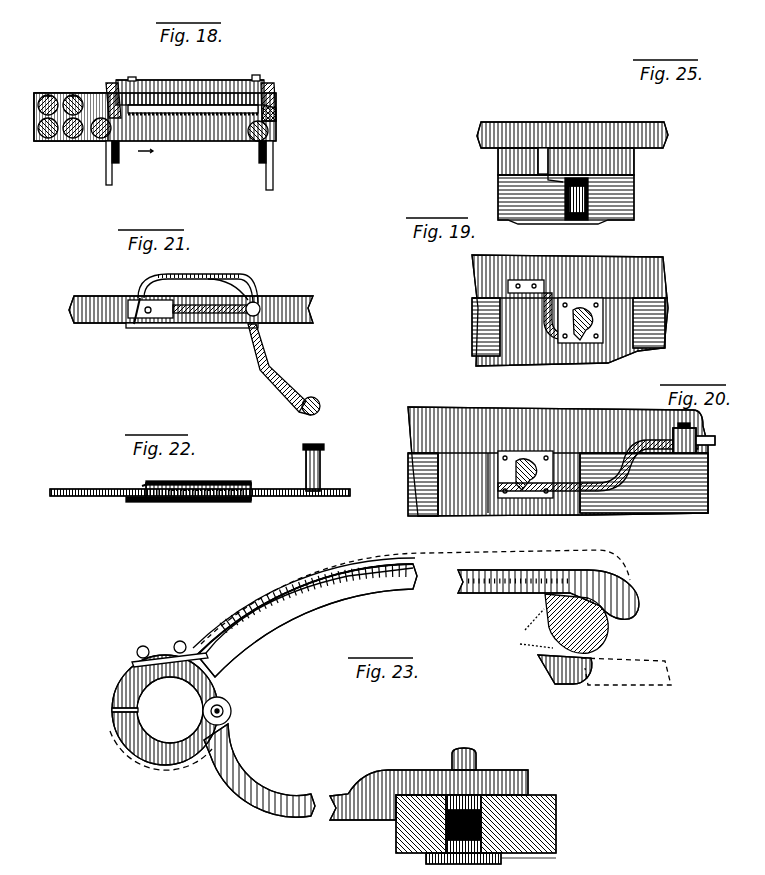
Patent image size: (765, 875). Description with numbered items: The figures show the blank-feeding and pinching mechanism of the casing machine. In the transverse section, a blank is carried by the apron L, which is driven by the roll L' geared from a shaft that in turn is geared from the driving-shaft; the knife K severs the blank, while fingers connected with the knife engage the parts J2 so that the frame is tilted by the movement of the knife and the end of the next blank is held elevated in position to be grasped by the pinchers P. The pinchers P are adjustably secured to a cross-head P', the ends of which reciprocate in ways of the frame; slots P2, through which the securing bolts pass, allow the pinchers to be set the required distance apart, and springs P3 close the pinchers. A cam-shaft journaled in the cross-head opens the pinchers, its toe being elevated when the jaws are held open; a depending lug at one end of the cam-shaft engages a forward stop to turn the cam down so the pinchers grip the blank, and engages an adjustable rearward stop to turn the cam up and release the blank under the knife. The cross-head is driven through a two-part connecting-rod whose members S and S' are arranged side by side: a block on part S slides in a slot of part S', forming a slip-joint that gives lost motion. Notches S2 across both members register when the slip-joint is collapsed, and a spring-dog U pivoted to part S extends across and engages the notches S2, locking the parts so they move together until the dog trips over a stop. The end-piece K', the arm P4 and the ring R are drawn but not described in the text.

In FIG. 18, the apron L is at (155, 112).
In FIG. 18, the roll L' is at (153, 113).
In FIG. 18, the knife K is at (190, 91).
In FIG. 18, the end block K' is at (200, 128).
In FIG. 18, the parts J2 is at (125, 72).
In FIG. 25, the pinchers P is at (566, 205).
In FIG. 19, the pinchers P is at (589, 323).
In FIG. 20, the pinchers P is at (526, 461).
In FIG. 23, the pinchers P is at (366, 772).
In FIG. 18, the cross-head P' is at (281, 111).
In FIG. 25, the cross-head P' is at (578, 162).
In FIG. 19, the cross-head P' is at (570, 310).
In FIG. 20, the cross-head P' is at (558, 469).
In FIG. 23, the cross-head P' is at (528, 864).
In FIG. 19, the slots P2 is at (586, 340).
In FIG. 20, the slots P2 is at (516, 490).
In FIG. 23, the slots P2 is at (549, 678).
In FIG. 25, the springs P3 is at (540, 172).
In FIG. 19, the springs P3 is at (540, 322).
In FIG. 23, the springs P3 is at (253, 598).
In FIG. 20, the lever arm P4 is at (607, 483).
In FIG. 23, the lever arm P4 is at (622, 679).
In FIG. 21, the connecting-rod part S is at (213, 308).
In FIG. 22, the connecting-rod part S is at (188, 498).
In FIG. 21, the connecting-rod part S' is at (191, 309).
In FIG. 22, the connecting-rod part S' is at (200, 489).
In FIG. 21, the notches S2 is at (134, 290).
In FIG. 22, the notches S2 is at (140, 475).
In FIG. 21, the spring-dog U is at (198, 282).
In FIG. 22, the spring-dog U is at (213, 477).
In FIG. 23, the ring R is at (532, 614).